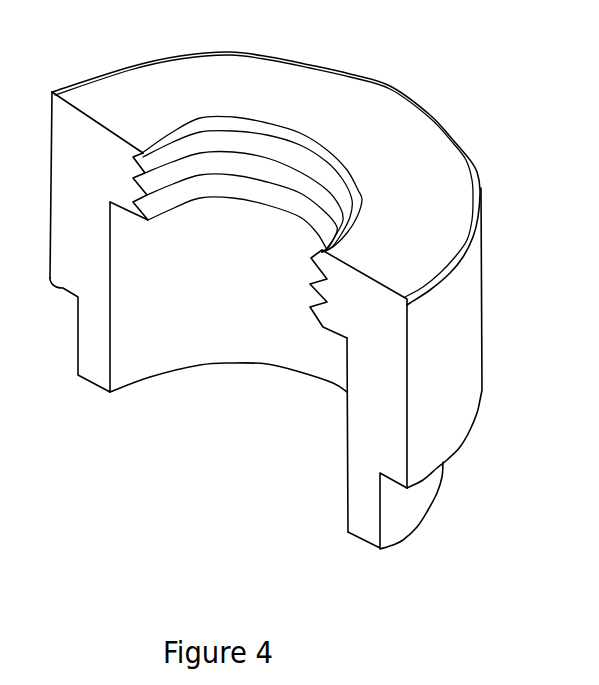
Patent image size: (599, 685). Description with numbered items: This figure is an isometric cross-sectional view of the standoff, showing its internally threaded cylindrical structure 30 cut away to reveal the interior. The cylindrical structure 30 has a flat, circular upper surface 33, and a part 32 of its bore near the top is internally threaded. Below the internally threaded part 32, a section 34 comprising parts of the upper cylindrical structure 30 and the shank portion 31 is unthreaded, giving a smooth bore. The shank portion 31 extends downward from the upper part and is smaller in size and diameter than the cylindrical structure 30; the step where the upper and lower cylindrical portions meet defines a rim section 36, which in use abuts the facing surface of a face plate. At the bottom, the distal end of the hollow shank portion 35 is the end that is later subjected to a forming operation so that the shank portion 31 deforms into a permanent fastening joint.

The internally threaded cylindrical structure 30 is at (484, 320).
The shank portion 31 is at (400, 505).
The internally threaded part 32 is at (182, 158).
The upper surface 33 is at (433, 212).
The unthreaded section 34 is at (150, 330).
The distal end of the hollow shank portion 35 is at (398, 542).
The rim section 36 is at (62, 289).